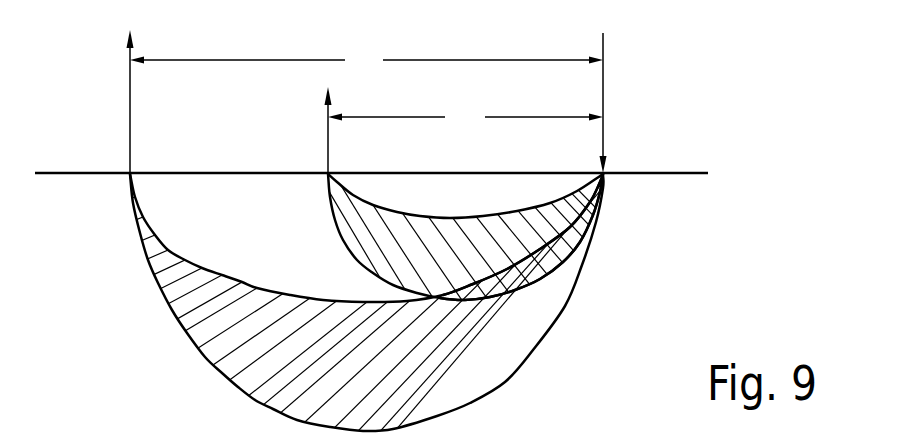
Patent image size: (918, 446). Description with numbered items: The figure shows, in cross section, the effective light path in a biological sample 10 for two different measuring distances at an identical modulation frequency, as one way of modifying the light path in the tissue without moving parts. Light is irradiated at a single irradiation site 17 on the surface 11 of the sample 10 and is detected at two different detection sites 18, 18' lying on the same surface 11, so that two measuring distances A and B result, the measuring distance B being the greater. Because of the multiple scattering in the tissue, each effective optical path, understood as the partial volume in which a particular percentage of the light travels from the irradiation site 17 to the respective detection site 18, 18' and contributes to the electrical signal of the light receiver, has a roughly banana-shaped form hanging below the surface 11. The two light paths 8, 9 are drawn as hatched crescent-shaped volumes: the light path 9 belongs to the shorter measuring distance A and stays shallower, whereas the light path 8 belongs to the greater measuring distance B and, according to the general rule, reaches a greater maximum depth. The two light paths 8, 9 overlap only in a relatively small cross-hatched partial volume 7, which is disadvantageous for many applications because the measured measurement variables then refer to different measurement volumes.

The partial volume 7 is at (547, 259).
The light path 8 is at (475, 368).
The light path 9 is at (357, 217).
The biological sample 10 is at (93, 258).
The surface 11 is at (687, 172).
The irradiation site 17 is at (607, 172).
The detection site 18 is at (99, 101).
The detection site 18' is at (291, 130).
The measuring distance A is at (465, 118).
The measuring distance B is at (366, 60).